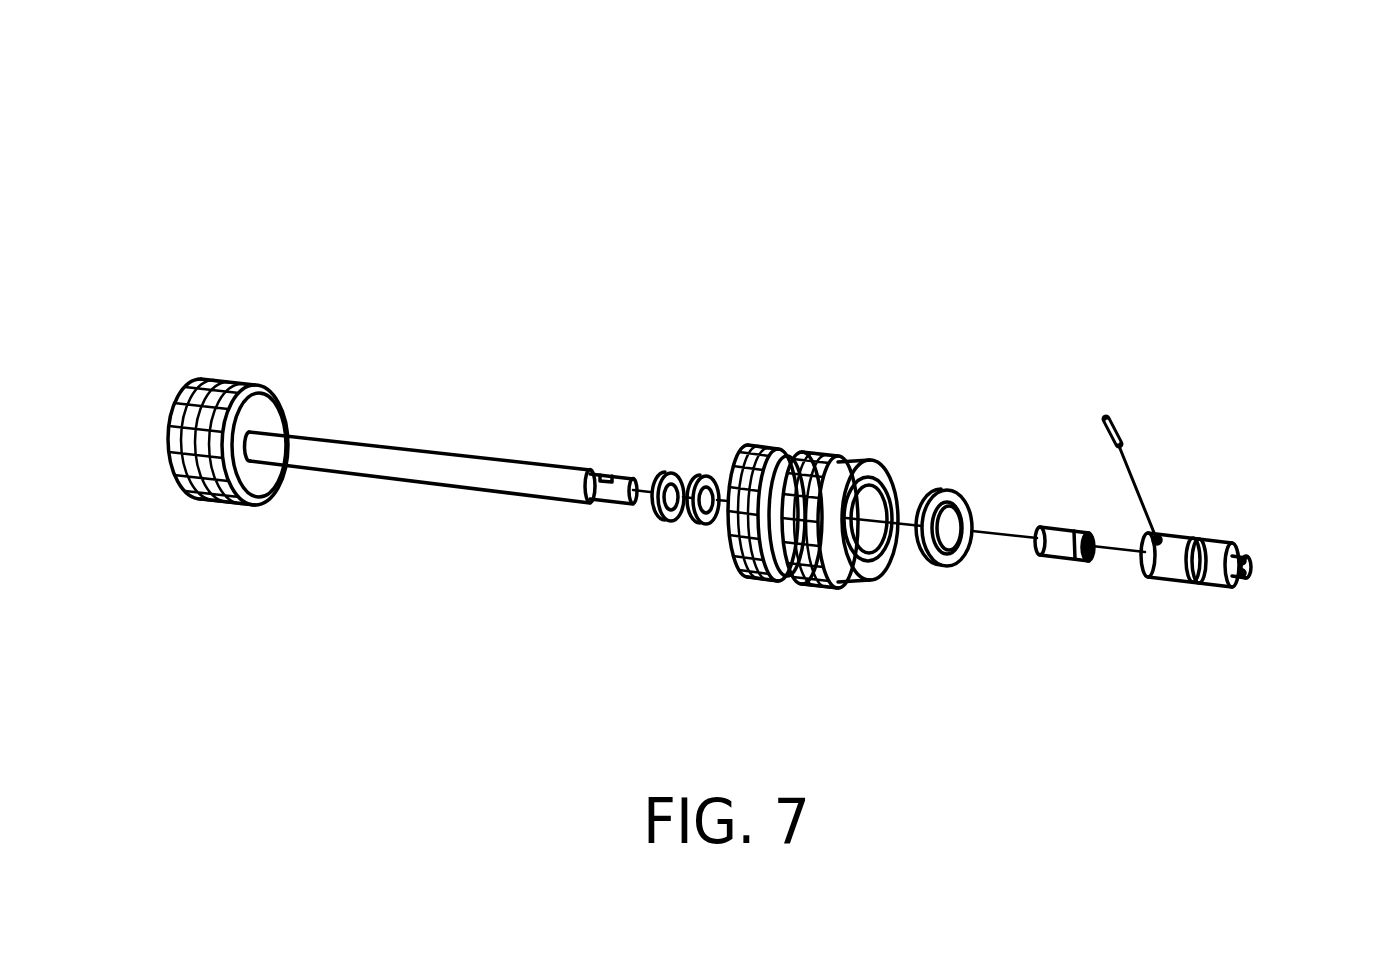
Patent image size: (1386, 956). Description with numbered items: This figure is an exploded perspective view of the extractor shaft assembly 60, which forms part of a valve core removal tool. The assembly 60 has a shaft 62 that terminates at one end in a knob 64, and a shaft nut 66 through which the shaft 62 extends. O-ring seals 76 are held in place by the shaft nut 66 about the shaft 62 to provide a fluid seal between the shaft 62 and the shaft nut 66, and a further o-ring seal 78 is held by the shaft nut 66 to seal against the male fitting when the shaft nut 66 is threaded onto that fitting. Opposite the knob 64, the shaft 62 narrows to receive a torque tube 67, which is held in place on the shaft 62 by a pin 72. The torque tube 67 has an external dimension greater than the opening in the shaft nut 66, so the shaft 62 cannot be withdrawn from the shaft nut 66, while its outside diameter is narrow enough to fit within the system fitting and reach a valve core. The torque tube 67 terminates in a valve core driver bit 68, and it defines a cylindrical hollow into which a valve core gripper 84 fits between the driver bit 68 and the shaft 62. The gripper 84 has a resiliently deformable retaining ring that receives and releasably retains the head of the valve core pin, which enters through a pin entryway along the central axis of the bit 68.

The extractor shaft assembly 60 is at (760, 270).
The shaft 62 is at (462, 466).
The knob 64 is at (236, 380).
The shaft nut 66 is at (819, 612).
The torque tube 67 is at (1169, 602).
The valve core driver bit 68 is at (1233, 548).
The pin 72 is at (1103, 428).
The o-ring seals 76 is at (698, 527).
The o-ring seal 78 is at (930, 564).
The valve core gripper 84 is at (1056, 553).